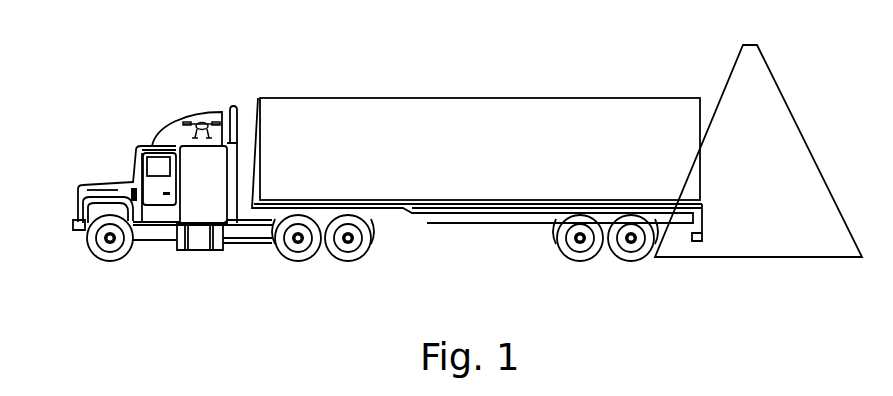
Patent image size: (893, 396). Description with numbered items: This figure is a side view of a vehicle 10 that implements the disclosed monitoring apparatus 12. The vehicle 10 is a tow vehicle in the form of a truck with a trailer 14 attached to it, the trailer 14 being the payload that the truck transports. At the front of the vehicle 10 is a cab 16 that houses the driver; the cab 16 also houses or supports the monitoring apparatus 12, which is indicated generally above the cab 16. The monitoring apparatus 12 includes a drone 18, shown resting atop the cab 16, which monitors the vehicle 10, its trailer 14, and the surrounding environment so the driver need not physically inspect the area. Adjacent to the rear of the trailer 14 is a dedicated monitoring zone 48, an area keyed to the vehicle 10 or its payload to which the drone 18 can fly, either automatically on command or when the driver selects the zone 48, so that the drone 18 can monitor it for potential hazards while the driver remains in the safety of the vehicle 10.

The vehicle 10 is at (95, 182).
The monitoring apparatus 12 is at (203, 91).
The trailer 14 is at (448, 183).
The cab 16 is at (205, 193).
The drone 18 is at (197, 125).
The dedicated monitoring zone 48 is at (787, 128).